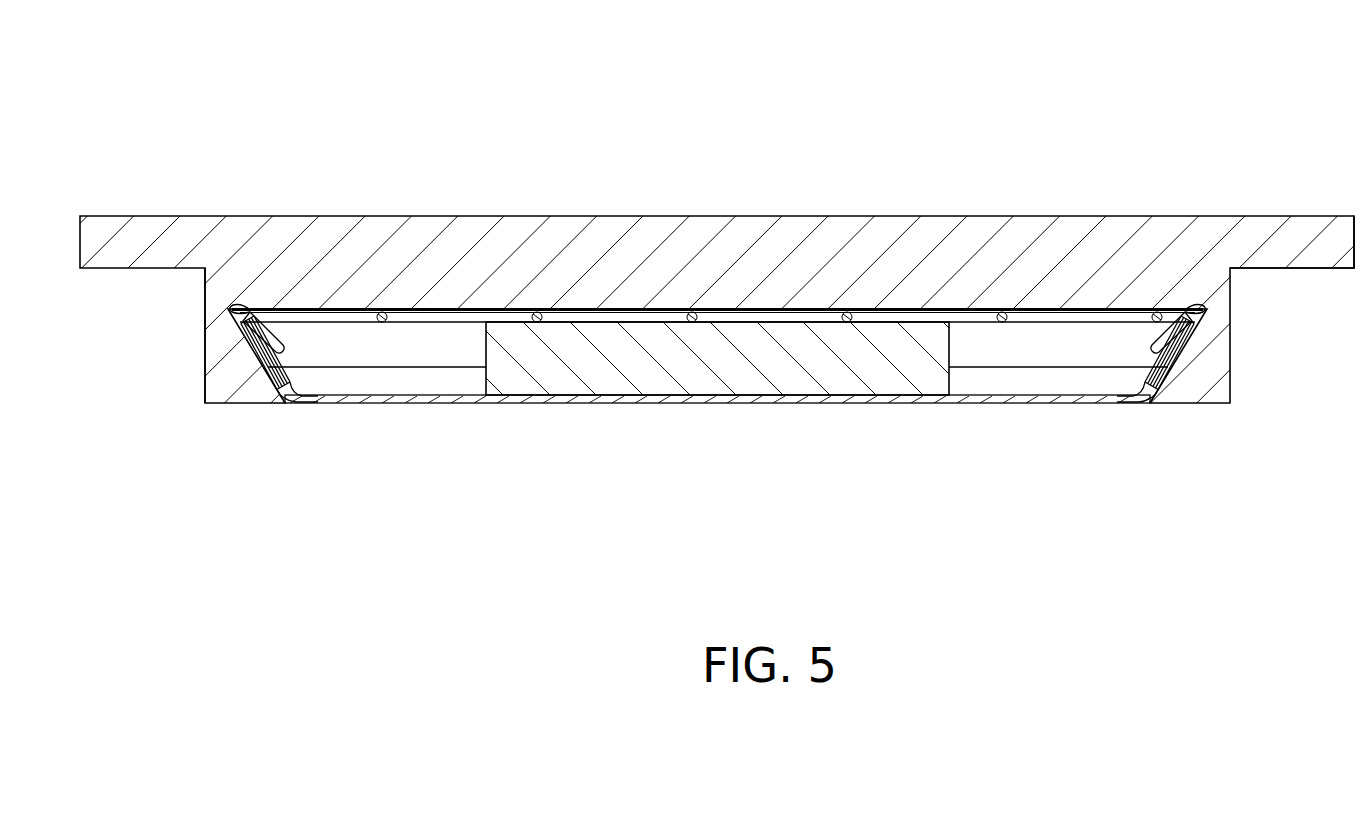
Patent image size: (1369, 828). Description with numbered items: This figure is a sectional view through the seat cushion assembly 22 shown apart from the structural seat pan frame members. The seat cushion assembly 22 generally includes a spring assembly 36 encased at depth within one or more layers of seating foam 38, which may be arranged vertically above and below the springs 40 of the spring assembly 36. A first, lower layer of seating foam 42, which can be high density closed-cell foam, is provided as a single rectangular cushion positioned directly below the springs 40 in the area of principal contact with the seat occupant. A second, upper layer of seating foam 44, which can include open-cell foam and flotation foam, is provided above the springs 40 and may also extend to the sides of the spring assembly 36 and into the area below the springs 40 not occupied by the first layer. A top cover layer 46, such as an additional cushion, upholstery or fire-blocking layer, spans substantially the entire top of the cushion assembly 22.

The seat cushion assembly 22 is at (778, 180).
The spring assembly 36 is at (290, 385).
The seating foam 38 is at (205, 323).
The springs 40 is at (624, 307).
The first layer of seating foam 42 is at (738, 375).
The second layer of seating foam 44 is at (988, 230).
The top cover layer 46 is at (1298, 232).